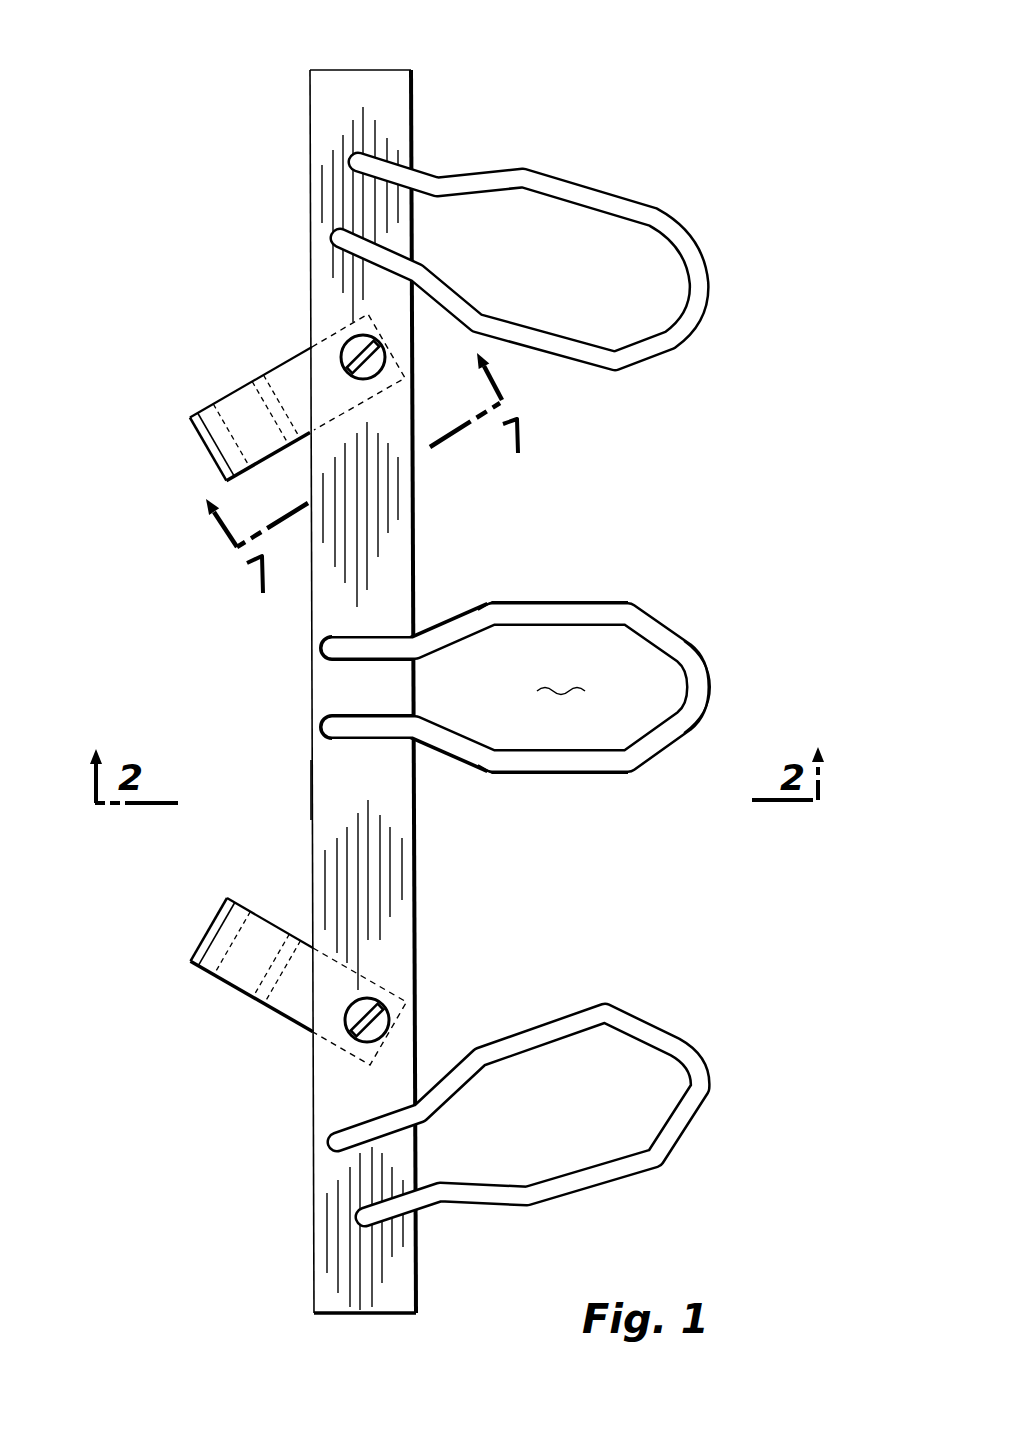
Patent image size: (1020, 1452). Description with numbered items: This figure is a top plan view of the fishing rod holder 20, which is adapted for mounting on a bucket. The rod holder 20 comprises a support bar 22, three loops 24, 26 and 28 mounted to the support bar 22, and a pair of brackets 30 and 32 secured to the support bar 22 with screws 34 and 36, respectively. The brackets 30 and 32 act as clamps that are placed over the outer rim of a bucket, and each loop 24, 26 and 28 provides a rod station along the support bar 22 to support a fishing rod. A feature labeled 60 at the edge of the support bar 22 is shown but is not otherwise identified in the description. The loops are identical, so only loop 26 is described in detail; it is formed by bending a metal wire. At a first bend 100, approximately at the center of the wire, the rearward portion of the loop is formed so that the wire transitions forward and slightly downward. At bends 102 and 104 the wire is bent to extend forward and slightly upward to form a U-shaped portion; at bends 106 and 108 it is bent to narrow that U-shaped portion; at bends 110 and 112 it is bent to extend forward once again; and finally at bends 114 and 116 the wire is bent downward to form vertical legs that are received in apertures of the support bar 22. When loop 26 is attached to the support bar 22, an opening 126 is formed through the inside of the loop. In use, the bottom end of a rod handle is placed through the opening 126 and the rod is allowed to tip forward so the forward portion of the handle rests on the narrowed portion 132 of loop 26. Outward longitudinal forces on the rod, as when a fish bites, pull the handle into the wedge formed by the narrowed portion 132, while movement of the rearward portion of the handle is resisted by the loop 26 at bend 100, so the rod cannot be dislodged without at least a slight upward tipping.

The fishing rod holder 20 is at (429, 659).
The support bar 22 is at (394, 132).
The loop 24 is at (624, 203).
The loop 26 is at (467, 683).
The loop 28 is at (662, 1028).
The bracket 30 is at (197, 413).
The bracket 32 is at (227, 898).
The screw 34 is at (352, 350).
The screw 36 is at (347, 1028).
The front face of board 60 is at (311, 790).
The first bend 100 is at (710, 683).
The bend 102 is at (620, 608).
The bend 104 is at (620, 771).
The bend 106 is at (490, 610).
The bend 108 is at (492, 766).
The bend 110 is at (412, 643).
The bend 112 is at (407, 727).
The bend 114 is at (322, 643).
The bend 116 is at (322, 729).
The opening 126 is at (560, 677).
The narrowed portion 132 is at (427, 690).